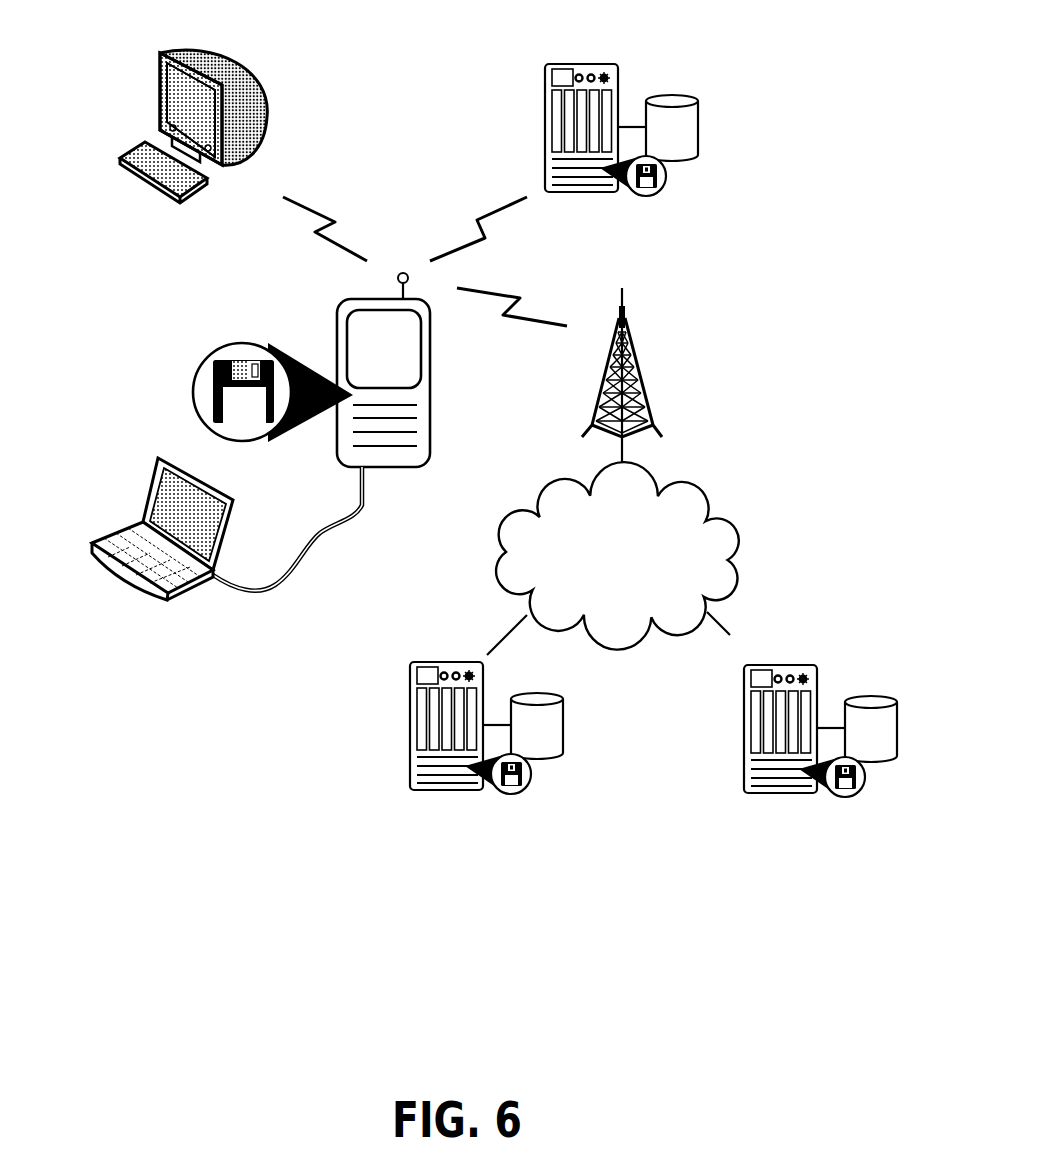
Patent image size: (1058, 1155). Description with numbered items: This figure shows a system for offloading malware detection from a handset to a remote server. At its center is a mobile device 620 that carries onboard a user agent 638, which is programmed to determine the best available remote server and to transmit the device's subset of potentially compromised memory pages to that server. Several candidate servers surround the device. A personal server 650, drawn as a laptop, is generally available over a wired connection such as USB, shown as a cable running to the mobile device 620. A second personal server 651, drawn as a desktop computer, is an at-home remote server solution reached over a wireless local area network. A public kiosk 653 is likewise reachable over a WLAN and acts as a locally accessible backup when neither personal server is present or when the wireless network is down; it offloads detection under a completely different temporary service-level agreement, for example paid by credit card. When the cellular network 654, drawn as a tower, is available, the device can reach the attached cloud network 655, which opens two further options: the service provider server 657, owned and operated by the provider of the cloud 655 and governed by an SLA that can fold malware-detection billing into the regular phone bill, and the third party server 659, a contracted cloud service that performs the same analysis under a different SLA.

The personal server 651 is at (157, 102).
The public kiosk 653 is at (668, 99).
The mobile device 620 is at (316, 370).
The user agent 638 is at (210, 380).
The personal server 650 is at (192, 529).
The cellular network 654 is at (673, 390).
The cloud network 655 is at (617, 555).
The service provider server 657 is at (417, 707).
The third party server 659 is at (759, 735).